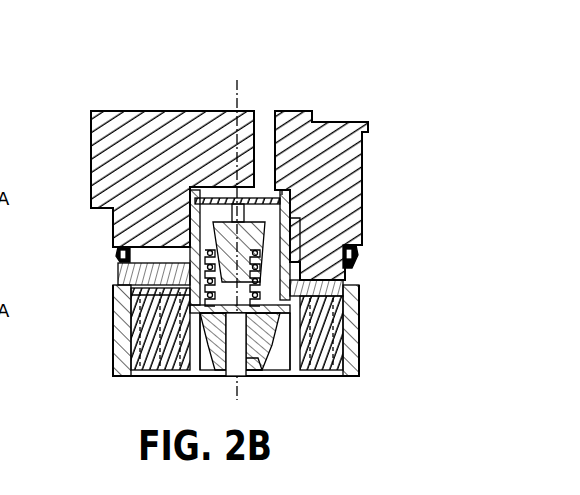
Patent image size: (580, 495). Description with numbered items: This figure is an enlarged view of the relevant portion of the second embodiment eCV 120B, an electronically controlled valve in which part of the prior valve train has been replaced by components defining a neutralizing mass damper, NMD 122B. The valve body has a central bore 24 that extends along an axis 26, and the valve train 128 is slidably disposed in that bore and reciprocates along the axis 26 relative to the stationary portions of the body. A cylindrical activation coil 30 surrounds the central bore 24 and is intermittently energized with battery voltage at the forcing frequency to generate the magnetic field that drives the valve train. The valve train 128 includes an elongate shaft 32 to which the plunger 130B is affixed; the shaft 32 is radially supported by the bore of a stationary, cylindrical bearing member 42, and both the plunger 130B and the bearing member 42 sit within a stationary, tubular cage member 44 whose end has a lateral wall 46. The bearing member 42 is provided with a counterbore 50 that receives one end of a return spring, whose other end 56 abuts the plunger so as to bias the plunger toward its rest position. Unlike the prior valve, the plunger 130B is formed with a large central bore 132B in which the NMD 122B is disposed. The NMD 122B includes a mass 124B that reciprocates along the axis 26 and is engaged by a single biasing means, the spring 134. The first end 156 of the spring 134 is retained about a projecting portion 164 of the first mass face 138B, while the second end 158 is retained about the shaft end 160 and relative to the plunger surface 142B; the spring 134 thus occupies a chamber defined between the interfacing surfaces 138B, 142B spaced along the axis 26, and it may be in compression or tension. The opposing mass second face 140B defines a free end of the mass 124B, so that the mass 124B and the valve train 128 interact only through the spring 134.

The eCV 120B is at (178, 66).
The axis 26 is at (242, 103).
The central bore 24 is at (200, 185).
The NMD 122B is at (312, 121).
The lateral wall 46 is at (200, 185).
The cage member 44 is at (192, 205).
The plunger 130B is at (186, 218).
The projecting portion 164 is at (285, 240).
The mass second face 140B is at (230, 197).
The first end of the spring 156 is at (205, 250).
The mass 124B is at (300, 222).
The first mass face 138B is at (120, 253).
The shaft end 160 is at (356, 250).
The central bore 132B is at (188, 285).
The plunger surface 142B is at (352, 278).
The activation coil 30 is at (160, 345).
The shaft 32 is at (348, 364).
The spring 134 is at (185, 305).
The valve train 128 is at (178, 325).
The second end of the spring 158 is at (320, 308).
The other end of the return spring 56 is at (330, 332).
The counterbore 50 is at (222, 372).
The bearing member 42 is at (270, 372).